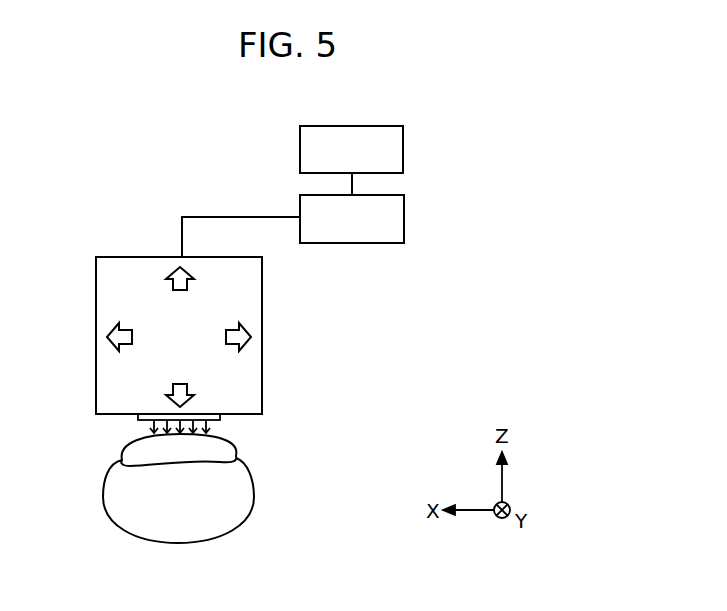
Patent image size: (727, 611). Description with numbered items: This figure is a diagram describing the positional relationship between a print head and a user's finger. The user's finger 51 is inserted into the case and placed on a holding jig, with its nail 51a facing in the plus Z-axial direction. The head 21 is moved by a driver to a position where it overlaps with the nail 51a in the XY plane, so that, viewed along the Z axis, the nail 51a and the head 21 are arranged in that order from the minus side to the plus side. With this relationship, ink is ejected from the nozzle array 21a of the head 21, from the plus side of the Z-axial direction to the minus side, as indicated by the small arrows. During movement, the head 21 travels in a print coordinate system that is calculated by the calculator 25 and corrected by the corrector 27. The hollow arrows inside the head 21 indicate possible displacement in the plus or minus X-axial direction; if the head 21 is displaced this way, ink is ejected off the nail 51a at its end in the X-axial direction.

The head 21 is at (262, 345).
The nozzle array 21a is at (222, 417).
The calculator 25 is at (404, 218).
The corrector 27 is at (403, 148).
The finger 51 is at (253, 487).
The nail 51a is at (232, 442).